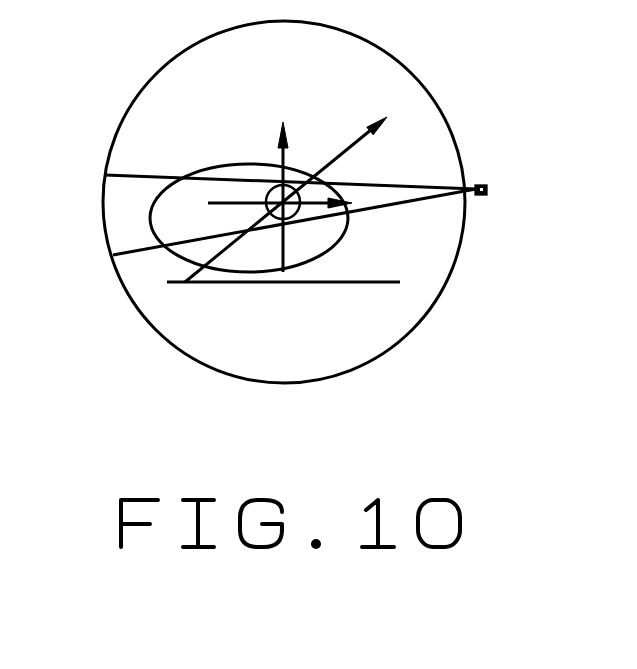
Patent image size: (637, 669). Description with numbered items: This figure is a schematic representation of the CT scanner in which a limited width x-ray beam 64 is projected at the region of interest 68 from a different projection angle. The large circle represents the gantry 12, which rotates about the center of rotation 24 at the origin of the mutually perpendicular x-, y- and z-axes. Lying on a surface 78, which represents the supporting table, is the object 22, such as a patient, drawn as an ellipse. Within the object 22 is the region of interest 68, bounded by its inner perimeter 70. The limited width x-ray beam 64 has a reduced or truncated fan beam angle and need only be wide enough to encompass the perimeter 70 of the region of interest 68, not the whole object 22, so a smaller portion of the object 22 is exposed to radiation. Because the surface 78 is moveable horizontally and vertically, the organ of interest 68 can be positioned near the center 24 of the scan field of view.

The gantry 12 is at (387, 50).
The object 22 is at (255, 255).
The center of rotation 24 is at (272, 197).
The limited width x-ray beam 64 is at (143, 251).
The region of interest 68 is at (268, 192).
The inner perimeter 70 is at (307, 235).
The surface 78 is at (378, 282).